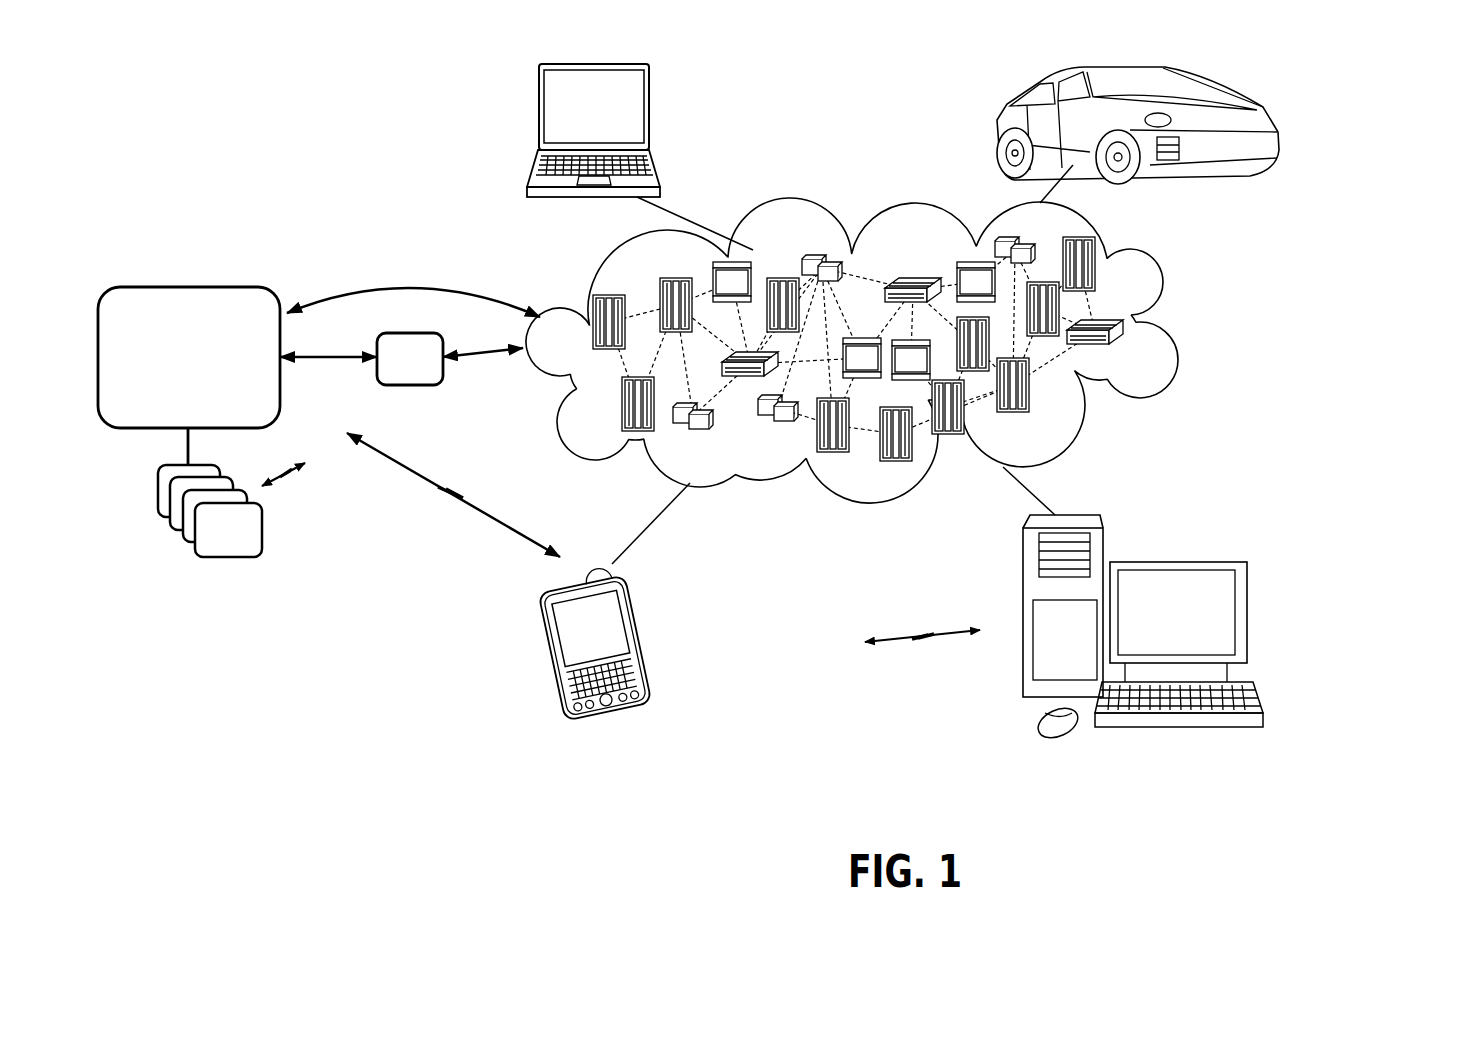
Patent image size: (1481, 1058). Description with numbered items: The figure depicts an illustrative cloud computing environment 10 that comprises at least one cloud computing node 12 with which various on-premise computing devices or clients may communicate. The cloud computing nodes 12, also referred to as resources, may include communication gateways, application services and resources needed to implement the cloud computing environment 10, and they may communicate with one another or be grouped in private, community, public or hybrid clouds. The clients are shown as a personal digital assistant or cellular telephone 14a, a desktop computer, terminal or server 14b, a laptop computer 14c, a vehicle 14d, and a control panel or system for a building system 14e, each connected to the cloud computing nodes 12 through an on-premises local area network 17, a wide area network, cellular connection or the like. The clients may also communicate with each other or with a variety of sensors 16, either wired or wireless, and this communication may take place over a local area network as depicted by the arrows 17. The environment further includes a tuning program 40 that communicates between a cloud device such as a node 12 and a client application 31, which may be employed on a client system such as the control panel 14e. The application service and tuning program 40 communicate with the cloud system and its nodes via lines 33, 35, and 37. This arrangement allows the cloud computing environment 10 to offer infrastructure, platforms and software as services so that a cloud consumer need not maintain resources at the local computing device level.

The cloud computing environment 10 is at (1348, 233).
The cloud computing node 12 is at (1128, 355).
The personal digital assistant or cellular telephone 14a is at (643, 635).
The desktop computer/terminal/server 14b is at (1143, 629).
The laptop computer 14c is at (650, 115).
The vehicle 14d is at (1107, 125).
The control panel or system for a building system 14e is at (214, 287).
The sensors 16 is at (183, 540).
The local area network 17 is at (283, 462).
The client application 31 is at (189, 357).
The line 33 is at (402, 285).
The line 35 is at (485, 381).
The line 37 is at (502, 360).
The tuning program 40 is at (361, 359).